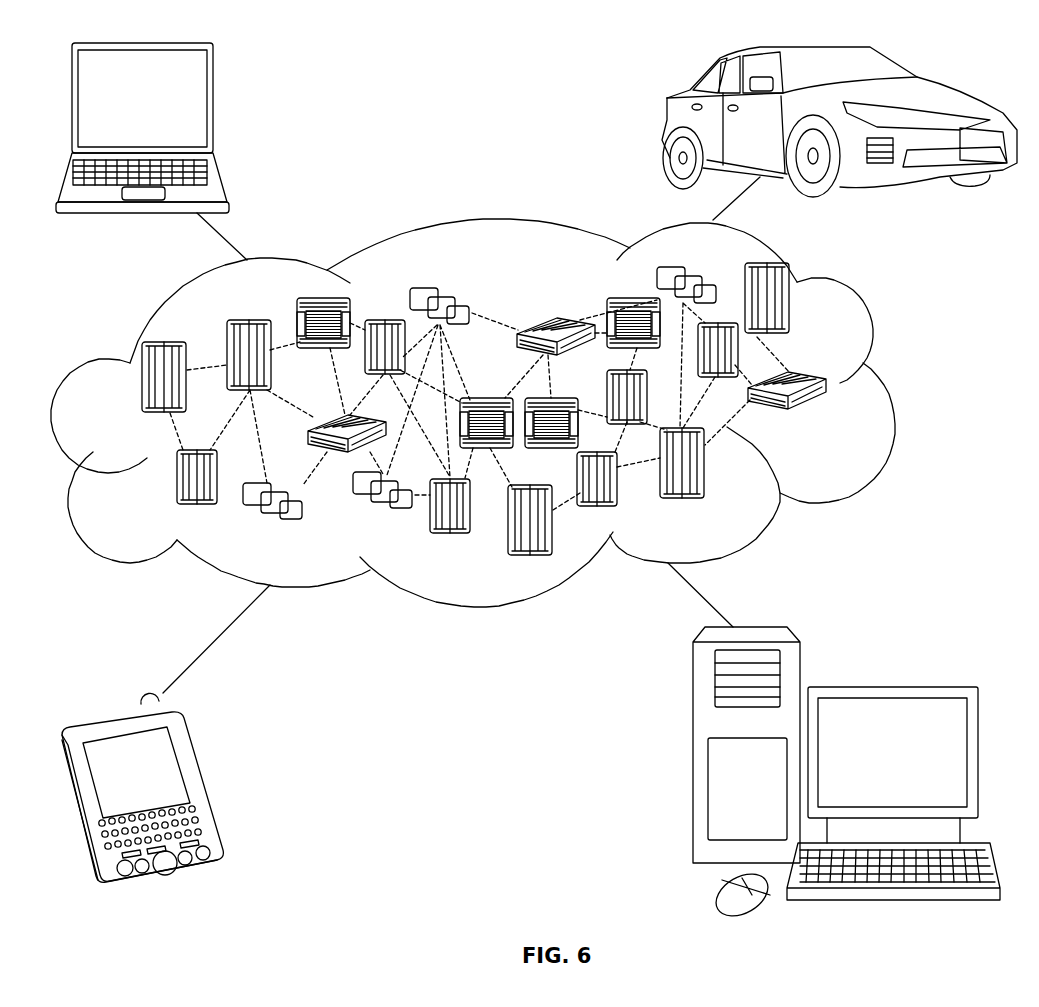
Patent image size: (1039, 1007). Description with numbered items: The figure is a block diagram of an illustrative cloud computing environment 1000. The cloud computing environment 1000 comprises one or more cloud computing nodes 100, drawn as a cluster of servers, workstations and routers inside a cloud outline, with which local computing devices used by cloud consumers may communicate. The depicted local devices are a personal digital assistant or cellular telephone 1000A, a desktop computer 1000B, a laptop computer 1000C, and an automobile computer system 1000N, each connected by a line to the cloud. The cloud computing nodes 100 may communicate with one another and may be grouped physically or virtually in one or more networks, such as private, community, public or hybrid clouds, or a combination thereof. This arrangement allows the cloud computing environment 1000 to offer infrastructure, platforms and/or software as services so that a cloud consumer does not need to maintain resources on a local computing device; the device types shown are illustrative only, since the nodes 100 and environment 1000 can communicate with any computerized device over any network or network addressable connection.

The cloud computing environment 1000 is at (897, 387).
The cloud computing nodes 100 is at (836, 419).
The personal digital assistant (PDA) or cellular telephone 1000A is at (203, 782).
The desktop computer 1000B is at (902, 660).
The laptop computer 1000C is at (213, 107).
The automobile computer system 1000N is at (665, 123).